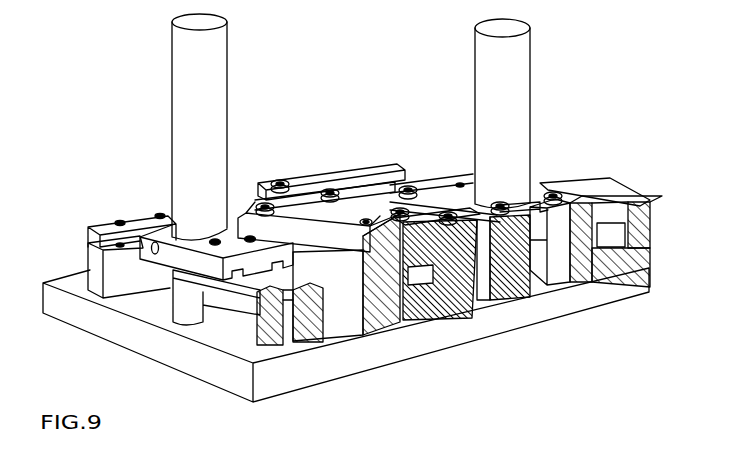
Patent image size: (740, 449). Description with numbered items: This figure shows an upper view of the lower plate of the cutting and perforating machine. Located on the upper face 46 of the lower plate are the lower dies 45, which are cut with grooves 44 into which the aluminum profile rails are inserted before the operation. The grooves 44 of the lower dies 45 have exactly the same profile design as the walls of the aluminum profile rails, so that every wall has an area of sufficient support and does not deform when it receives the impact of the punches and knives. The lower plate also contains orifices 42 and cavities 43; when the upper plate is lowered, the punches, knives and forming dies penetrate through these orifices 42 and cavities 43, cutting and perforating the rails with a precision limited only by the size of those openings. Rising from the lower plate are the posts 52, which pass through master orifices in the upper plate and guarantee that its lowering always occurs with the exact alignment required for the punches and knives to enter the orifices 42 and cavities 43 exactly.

The orifices 42 is at (122, 221).
The cavities 43 is at (410, 190).
The grooves 44 is at (240, 278).
The lower dies 45 is at (122, 277).
The upper face 46 is at (133, 305).
The posts 52 is at (205, 118).